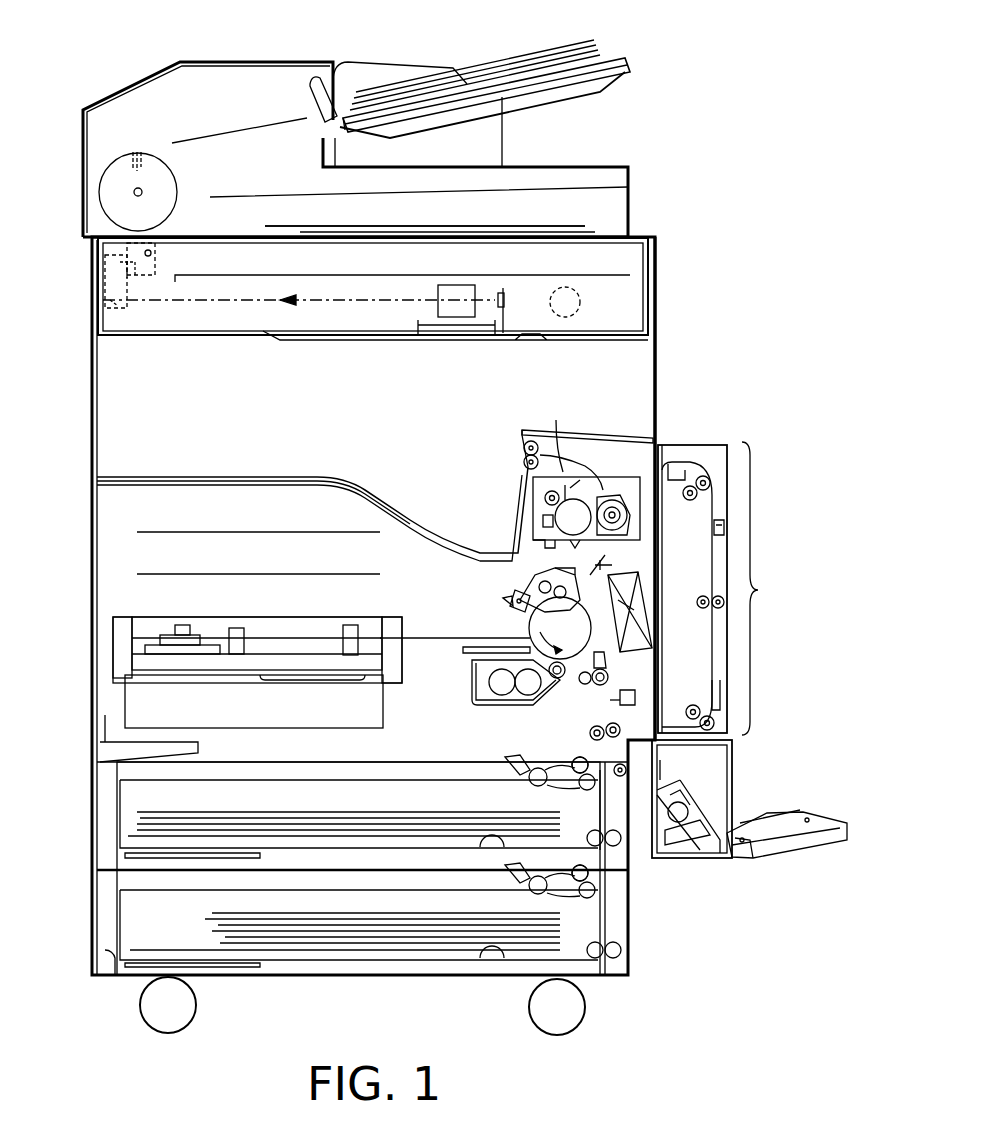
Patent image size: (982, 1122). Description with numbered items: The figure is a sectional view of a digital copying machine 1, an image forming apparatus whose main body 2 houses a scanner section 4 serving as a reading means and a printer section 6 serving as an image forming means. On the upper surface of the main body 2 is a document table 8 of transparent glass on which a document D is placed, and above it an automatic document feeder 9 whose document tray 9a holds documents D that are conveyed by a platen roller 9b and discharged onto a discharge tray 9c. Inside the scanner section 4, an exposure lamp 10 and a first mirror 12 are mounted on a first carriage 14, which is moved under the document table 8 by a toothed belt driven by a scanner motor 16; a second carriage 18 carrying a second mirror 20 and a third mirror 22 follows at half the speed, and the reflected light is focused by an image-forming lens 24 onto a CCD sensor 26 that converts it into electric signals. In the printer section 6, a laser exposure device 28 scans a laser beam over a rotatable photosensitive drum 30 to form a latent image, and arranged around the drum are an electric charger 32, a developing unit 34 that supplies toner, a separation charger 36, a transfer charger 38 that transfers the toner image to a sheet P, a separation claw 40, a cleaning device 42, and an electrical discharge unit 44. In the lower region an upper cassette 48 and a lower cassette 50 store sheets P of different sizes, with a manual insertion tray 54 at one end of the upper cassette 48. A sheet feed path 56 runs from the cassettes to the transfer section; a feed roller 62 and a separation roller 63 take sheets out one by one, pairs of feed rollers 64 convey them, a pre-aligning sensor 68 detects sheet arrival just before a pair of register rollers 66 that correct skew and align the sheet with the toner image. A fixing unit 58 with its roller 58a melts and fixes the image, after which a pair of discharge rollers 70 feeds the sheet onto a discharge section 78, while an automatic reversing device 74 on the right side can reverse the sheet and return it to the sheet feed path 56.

The digital copying machine 1 is at (722, 237).
The main body 2 is at (655, 355).
The scanner section 4 is at (649, 300).
The printer section 6 is at (742, 762).
The document table 8 is at (585, 226).
The automatic document feeder 9 is at (253, 80).
The document tray 9a is at (573, 72).
The platen roller 9b is at (100, 192).
The discharge tray 9c is at (563, 167).
The exposure lamp 10 is at (152, 254).
The first mirror 12 is at (135, 270).
The first carriage 14 is at (200, 280).
The scanner motor 16 is at (582, 302).
The second carriage 18 is at (105, 293).
The second mirror 20 is at (118, 268).
The third mirror 22 is at (110, 300).
The image-forming lens 24 is at (455, 317).
The CCD sensor 26 is at (506, 300).
The laser exposure device 28 is at (194, 628).
The photosensitive drum 30 is at (593, 570).
The electric charger 32 is at (530, 625).
The developing unit 34 is at (492, 686).
The separation charger 36 is at (606, 655).
The transfer charger 38 is at (628, 630).
The separation claw 40 is at (632, 584).
The cleaning device 42 is at (528, 582).
The electrical discharge unit 44 is at (507, 598).
The upper cassette 48 is at (117, 805).
The lower cassette 50 is at (117, 912).
The manual insertion tray 54 is at (785, 845).
The sheet feed path 56 is at (640, 617).
The fixing unit 58 is at (570, 480).
The fixing roller 58a is at (618, 470).
The feed roller 62 is at (530, 780).
The separation roller 63 is at (572, 785).
The feed rollers 64 is at (590, 733).
The register rollers 66 is at (548, 690).
The pre-aligning sensor 68 is at (627, 700).
The discharge rollers 70 is at (523, 447).
The automatic reversing device 74 is at (762, 590).
The discharge section 78 is at (294, 400).
The document D is at (515, 62).
The copy sheet P is at (330, 927).